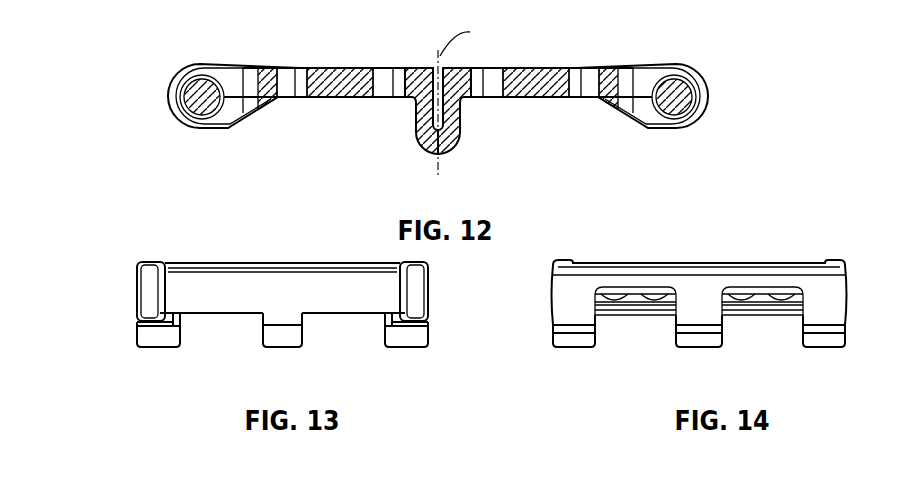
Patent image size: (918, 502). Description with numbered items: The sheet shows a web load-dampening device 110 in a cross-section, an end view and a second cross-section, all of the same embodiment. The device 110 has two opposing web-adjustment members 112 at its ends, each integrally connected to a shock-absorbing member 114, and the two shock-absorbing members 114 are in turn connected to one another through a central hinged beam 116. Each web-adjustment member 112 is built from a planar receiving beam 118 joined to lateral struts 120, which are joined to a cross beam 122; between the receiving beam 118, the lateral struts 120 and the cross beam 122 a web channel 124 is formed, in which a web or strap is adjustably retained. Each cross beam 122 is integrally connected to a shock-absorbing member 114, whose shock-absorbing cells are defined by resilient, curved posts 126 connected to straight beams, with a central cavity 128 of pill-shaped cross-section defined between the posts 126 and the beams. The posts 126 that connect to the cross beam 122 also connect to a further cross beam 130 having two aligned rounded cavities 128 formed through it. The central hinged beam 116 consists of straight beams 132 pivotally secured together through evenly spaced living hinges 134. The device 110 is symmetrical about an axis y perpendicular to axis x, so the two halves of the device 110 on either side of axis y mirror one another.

In FIG. 12, the web load-dampening device 110 is at (160, 14).
In FIG. 13, the web load-dampening device 110 is at (160, 243).
In FIG. 14, the web load-dampening device 110 is at (630, 243).
In FIG. 12, the web-adjustment member 112 is at (178, 121).
In FIG. 13, the web-adjustment member 112 is at (383, 261).
In FIG. 12, the shock-absorbing member 114 is at (363, 68).
In FIG. 12, the central hinged beam 116 is at (462, 134).
In FIG. 13, the planar receiving beam 118 is at (290, 263).
In FIG. 13, the lateral strut 120 is at (138, 278).
In FIG. 13, the cross beam 122 is at (345, 303).
In FIG. 12, the web channel 124 is at (237, 78).
In FIG. 12, the curved post 126 is at (303, 69).
In FIG. 12, the central cavity 128 is at (262, 71).
In FIG. 12, the cross beam 130 is at (343, 98).
In FIG. 12, the straight beam 132 is at (366, 61).
In FIG. 12, the living hinge 134 is at (418, 138).
In FIG. 13, the living hinge 134 is at (157, 348).
In FIG. 14, the living hinge 134 is at (573, 348).